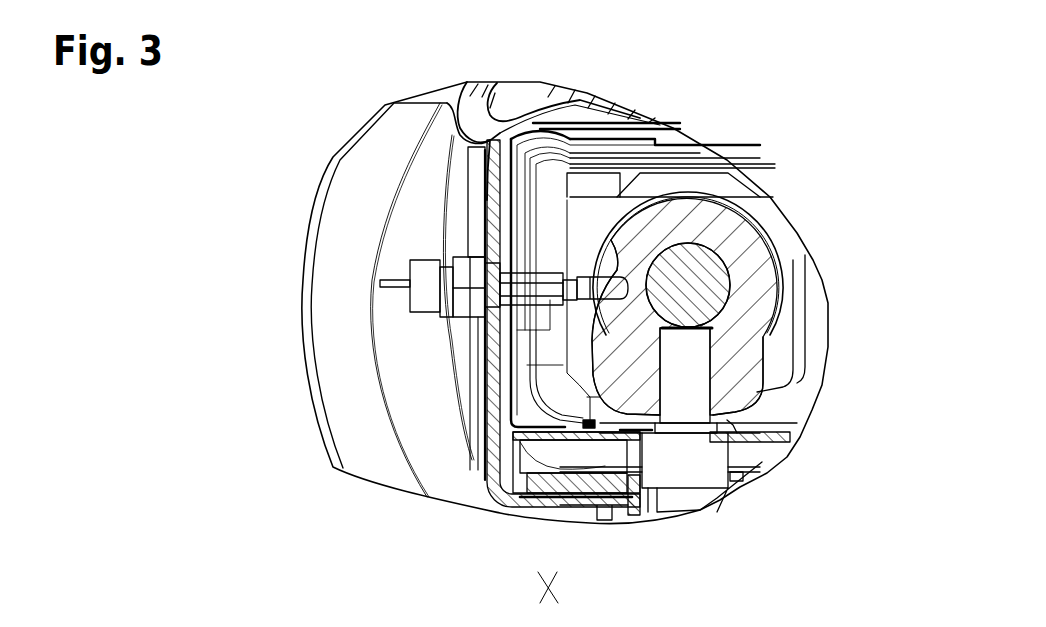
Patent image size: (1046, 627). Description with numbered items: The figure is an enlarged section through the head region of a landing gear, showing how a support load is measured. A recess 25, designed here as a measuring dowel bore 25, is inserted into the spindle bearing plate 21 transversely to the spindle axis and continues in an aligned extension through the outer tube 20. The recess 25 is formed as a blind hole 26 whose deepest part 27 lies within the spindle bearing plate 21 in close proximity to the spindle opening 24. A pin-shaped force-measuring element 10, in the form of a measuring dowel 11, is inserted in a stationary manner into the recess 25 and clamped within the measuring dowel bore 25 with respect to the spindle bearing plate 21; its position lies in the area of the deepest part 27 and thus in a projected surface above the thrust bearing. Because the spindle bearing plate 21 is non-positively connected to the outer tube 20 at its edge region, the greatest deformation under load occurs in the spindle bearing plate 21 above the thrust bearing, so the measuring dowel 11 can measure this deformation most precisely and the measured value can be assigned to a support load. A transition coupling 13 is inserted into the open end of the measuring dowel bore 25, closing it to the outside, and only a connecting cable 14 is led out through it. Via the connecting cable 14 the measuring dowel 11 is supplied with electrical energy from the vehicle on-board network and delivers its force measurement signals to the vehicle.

The transition coupling 13 is at (462, 258).
The connecting cable 14 is at (383, 283).
The outer tube 20 is at (472, 335).
The spindle bearing plate 21 is at (747, 253).
The spindle opening 24 is at (750, 297).
The recess (measuring dowel bore) 25 is at (538, 296).
The blind hole 26 is at (510, 436).
The deepest part 27 is at (640, 248).
The pin-shaped force-measuring element 10 is at (578, 156).
The measuring dowel 11 is at (607, 283).